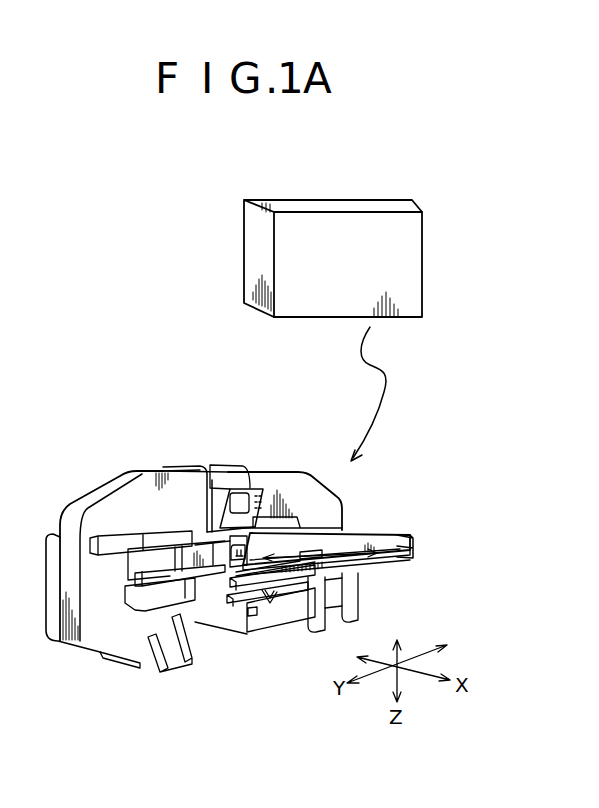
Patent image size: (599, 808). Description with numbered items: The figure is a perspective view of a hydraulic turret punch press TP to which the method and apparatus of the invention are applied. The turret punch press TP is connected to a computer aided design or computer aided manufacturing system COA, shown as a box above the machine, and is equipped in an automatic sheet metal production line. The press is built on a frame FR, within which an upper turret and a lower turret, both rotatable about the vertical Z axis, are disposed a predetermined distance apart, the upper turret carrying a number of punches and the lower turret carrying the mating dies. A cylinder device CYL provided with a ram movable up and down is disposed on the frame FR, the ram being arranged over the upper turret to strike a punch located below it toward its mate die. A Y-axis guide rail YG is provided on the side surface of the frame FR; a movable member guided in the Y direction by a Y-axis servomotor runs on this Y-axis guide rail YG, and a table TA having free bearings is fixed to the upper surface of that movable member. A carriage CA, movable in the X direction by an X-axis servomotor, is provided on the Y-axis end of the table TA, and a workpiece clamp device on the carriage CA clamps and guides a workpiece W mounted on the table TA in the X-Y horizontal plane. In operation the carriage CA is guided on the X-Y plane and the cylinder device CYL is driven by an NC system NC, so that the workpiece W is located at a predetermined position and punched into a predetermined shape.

The computer aided design or computer aided manufacturing system COA is at (422, 242).
The NC system NC is at (250, 487).
The turret punch press TP is at (288, 467).
The frame FR is at (340, 508).
The cylinder device CYL is at (310, 551).
The carriage CA is at (415, 545).
The workpiece W is at (375, 563).
The table TA is at (363, 594).
The Y-axis guide rail YG is at (268, 603).